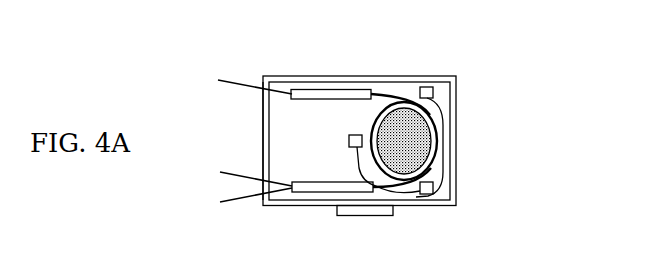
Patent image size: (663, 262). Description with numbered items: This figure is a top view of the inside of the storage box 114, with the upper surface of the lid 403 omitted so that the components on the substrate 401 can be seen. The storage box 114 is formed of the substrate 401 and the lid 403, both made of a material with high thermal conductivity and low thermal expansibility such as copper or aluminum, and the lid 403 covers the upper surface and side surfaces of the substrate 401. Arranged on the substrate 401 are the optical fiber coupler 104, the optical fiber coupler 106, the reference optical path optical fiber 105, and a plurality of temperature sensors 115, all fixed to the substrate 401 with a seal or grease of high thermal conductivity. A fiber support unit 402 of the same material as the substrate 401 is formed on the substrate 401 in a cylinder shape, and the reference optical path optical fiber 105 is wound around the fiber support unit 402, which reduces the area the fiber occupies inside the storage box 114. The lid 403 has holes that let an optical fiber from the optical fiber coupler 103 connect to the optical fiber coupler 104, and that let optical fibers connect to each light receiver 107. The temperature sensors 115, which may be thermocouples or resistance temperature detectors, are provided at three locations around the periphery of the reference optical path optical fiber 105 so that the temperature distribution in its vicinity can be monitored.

The storage box 114 is at (280, 52).
The substrate 401 is at (387, 87).
The lid 403 is at (263, 105).
The optical fiber coupler 104 is at (313, 89).
The optical fiber coupler 103 is at (241, 83).
The optical fiber coupler 106 is at (313, 191).
The light receiver 107 is at (242, 187).
The fiber support unit 402 is at (420, 146).
The reference optical path optical fiber 105 is at (430, 112).
The temperature sensor 115 is at (430, 87).